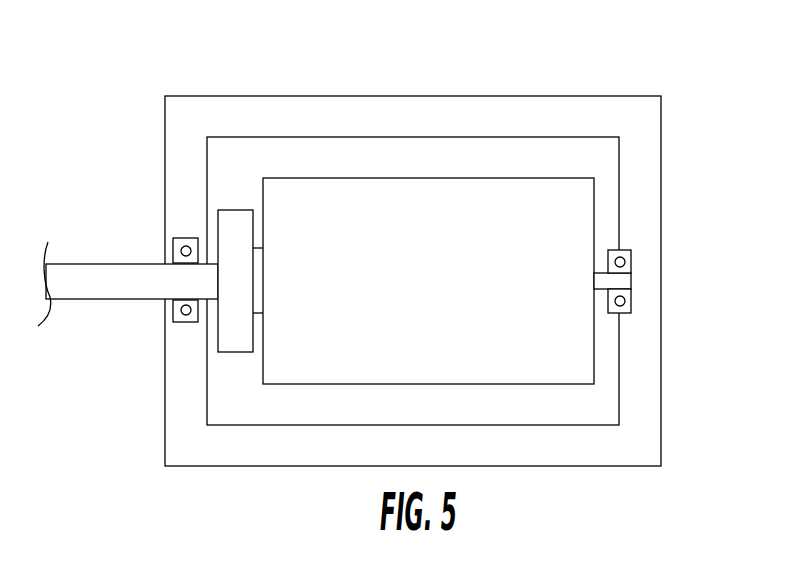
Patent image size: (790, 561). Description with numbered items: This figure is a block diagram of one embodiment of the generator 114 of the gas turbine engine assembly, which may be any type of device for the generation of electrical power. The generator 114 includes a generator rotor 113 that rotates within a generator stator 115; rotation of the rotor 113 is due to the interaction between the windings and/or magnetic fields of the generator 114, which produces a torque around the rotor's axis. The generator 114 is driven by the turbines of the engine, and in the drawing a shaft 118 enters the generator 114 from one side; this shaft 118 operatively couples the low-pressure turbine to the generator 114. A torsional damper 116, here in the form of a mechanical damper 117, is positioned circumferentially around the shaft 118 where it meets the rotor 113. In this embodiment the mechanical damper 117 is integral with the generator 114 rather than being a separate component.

The generator rotor 113 is at (443, 286).
The generator 114 is at (569, 90).
The generator stator 115 is at (393, 96).
The torsional damper 116 is at (234, 194).
The mechanical damper 117 is at (227, 209).
The shaft 118 is at (118, 299).